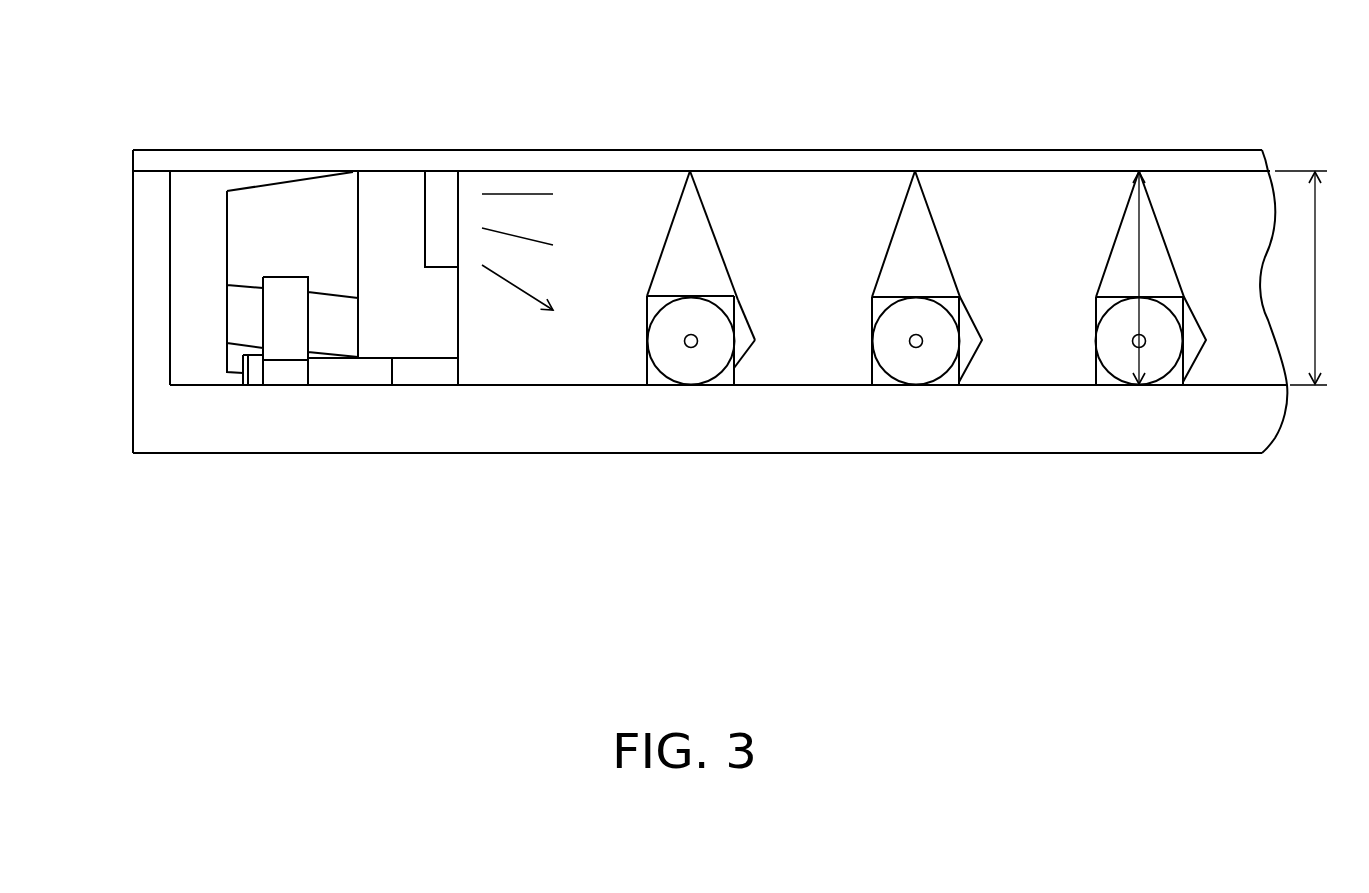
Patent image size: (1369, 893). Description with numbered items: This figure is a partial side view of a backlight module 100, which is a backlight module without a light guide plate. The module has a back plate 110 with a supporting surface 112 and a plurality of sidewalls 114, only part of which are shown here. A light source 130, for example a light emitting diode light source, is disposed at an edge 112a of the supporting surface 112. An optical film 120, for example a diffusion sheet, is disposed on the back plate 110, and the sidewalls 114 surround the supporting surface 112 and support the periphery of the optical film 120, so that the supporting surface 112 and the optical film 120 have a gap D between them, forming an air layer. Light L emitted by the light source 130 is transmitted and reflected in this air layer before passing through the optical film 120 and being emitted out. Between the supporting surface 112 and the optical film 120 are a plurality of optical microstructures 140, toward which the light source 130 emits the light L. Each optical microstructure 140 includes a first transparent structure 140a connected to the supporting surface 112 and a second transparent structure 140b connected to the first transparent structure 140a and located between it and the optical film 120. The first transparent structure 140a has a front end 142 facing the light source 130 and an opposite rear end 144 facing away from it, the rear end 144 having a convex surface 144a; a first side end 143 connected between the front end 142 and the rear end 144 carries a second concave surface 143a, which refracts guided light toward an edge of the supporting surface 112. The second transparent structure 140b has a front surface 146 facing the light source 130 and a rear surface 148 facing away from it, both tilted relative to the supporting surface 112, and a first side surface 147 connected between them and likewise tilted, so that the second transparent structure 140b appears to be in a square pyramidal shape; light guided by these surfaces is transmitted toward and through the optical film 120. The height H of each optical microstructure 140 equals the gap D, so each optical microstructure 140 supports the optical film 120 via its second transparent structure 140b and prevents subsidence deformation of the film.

The backlight module 100 is at (1365, 609).
The back plate 110 is at (1028, 417).
The supporting surface 112 is at (1010, 385).
The edge of the supporting surface 112a is at (168, 466).
The sidewalls 114 is at (150, 220).
The optical film 120 is at (853, 162).
The light source 130 is at (396, 213).
The optical microstructures 140 is at (610, 83).
The first transparent structure 140a is at (630, 243).
The second transparent structure 140b is at (633, 330).
The front end 142 is at (647, 370).
The first side end 143 is at (653, 375).
The second concave surface 143a is at (690, 360).
The rear end 144 is at (737, 367).
The convex surface 144a is at (747, 315).
The front surface 146 is at (668, 222).
The first side surface 147 is at (694, 234).
The rear surface 148 is at (708, 203).
The light L is at (503, 195).
The height of each optical microstructure H is at (1140, 242).
The gap D is at (1308, 278).